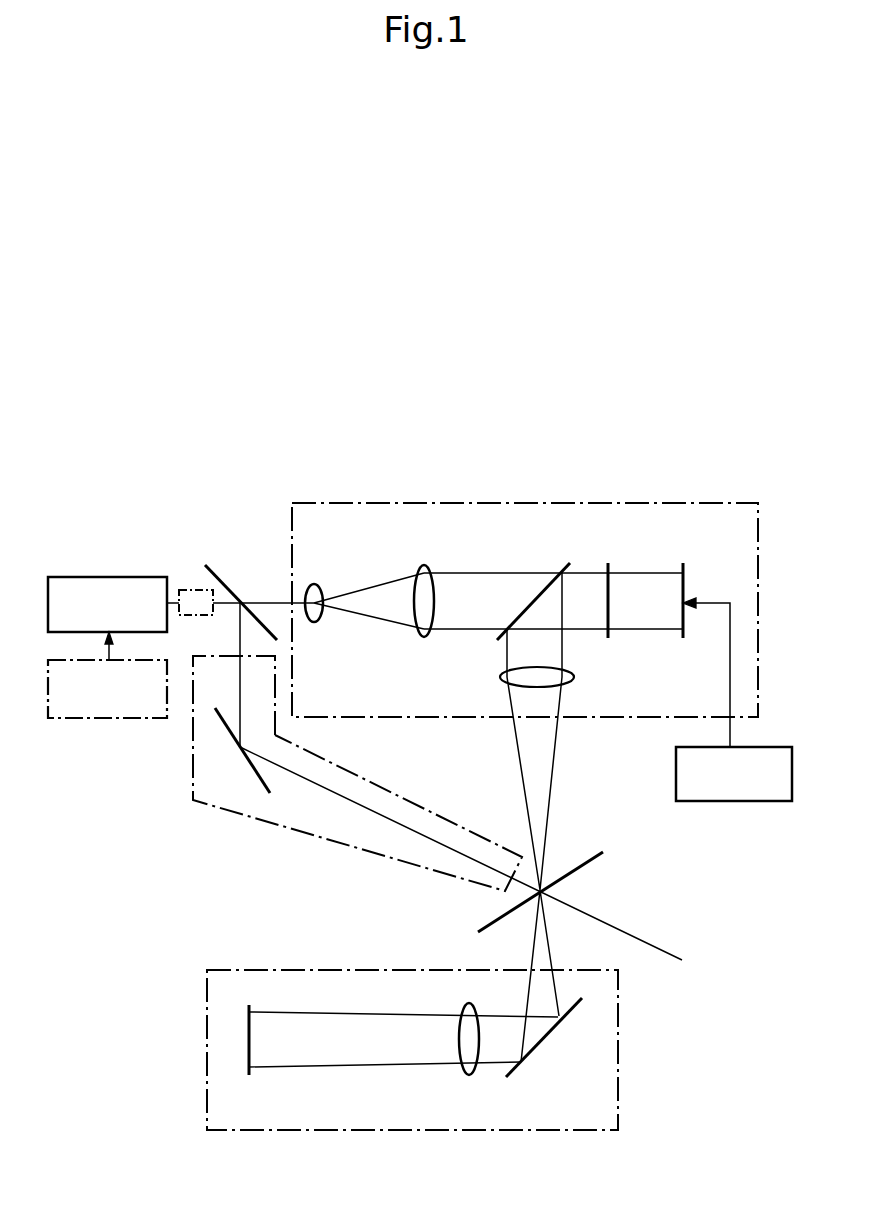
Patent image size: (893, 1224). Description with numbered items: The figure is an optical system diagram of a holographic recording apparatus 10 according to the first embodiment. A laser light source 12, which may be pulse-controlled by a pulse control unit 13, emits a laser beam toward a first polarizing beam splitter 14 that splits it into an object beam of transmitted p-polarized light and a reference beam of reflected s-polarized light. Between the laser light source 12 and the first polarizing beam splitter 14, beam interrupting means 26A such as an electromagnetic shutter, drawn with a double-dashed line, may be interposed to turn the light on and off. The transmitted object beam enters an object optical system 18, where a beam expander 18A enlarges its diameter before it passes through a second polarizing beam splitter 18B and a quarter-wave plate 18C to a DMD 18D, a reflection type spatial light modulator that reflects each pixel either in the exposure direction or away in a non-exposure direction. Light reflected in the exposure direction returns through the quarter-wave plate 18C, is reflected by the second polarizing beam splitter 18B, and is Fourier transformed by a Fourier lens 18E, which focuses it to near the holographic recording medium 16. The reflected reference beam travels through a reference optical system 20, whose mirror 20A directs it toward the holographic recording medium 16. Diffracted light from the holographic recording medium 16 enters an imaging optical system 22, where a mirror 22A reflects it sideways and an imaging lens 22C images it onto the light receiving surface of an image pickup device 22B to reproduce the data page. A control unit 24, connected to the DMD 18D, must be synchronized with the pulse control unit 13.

The holographic recording apparatus 10 is at (314, 416).
The laser light source 12 is at (144, 563).
The pulse control unit 13 is at (120, 664).
The first polarizing beam splitter 14 is at (220, 577).
The holographic recording medium 16 is at (590, 858).
The object optical system 18 is at (294, 502).
The beam expander 18A is at (310, 563).
The second polarizing beam splitter 18B is at (556, 574).
The quarter-wave plate 18C is at (608, 560).
The DMD 18D is at (680, 562).
The Fourier lens 18E is at (575, 677).
The reference optical system 20 is at (252, 818).
The mirror 20A is at (232, 737).
The imaging optical system 22 is at (618, 1100).
The mirror 22A is at (516, 1068).
The image pickup device 22B is at (249, 1075).
The imaging lens 22C is at (466, 1076).
The control unit 24 is at (738, 801).
The beam interrupting means 26A is at (214, 610).